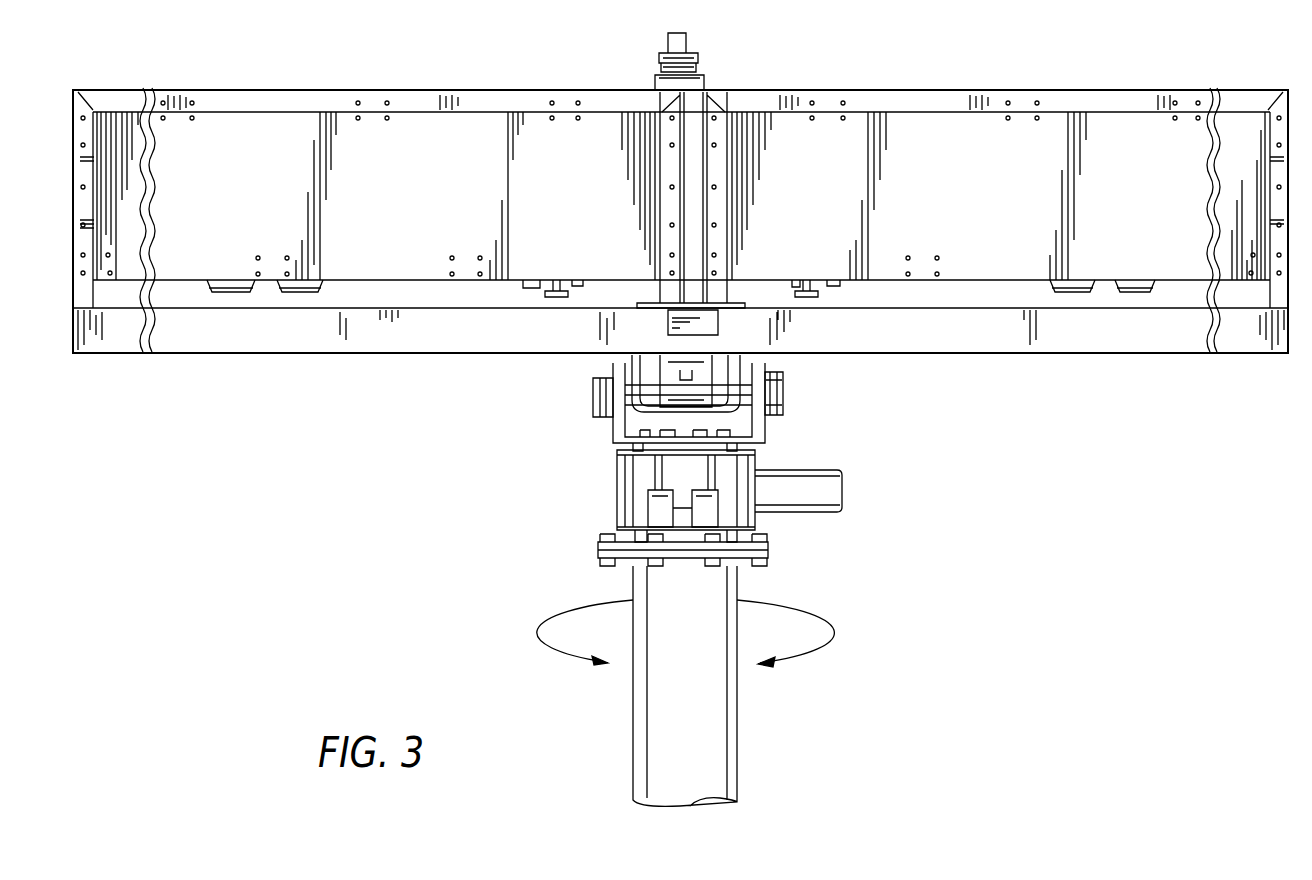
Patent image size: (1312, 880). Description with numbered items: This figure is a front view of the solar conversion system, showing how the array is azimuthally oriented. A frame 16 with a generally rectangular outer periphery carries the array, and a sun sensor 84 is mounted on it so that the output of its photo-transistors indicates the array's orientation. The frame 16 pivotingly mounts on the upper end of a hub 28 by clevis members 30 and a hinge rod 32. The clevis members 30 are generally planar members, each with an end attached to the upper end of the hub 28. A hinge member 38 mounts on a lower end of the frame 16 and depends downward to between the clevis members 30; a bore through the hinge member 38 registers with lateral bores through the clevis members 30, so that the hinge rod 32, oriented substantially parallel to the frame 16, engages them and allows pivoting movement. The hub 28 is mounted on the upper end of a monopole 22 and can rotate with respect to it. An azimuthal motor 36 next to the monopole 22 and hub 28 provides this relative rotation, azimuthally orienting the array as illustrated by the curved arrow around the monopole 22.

The frame 16 is at (1103, 354).
The monopole 22 is at (733, 717).
The hub 28 is at (676, 403).
The clevis members 30 is at (615, 435).
The hinge rod 32 is at (771, 403).
The azimuthal motor 36 is at (822, 490).
The hinge member 38 is at (765, 360).
The sun sensor 84 is at (715, 60).